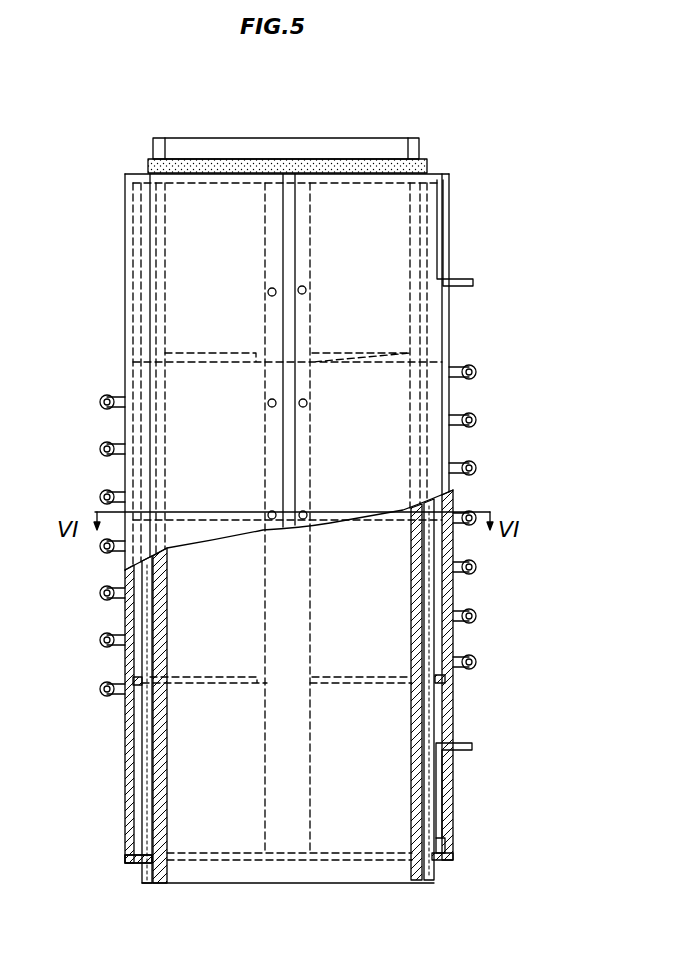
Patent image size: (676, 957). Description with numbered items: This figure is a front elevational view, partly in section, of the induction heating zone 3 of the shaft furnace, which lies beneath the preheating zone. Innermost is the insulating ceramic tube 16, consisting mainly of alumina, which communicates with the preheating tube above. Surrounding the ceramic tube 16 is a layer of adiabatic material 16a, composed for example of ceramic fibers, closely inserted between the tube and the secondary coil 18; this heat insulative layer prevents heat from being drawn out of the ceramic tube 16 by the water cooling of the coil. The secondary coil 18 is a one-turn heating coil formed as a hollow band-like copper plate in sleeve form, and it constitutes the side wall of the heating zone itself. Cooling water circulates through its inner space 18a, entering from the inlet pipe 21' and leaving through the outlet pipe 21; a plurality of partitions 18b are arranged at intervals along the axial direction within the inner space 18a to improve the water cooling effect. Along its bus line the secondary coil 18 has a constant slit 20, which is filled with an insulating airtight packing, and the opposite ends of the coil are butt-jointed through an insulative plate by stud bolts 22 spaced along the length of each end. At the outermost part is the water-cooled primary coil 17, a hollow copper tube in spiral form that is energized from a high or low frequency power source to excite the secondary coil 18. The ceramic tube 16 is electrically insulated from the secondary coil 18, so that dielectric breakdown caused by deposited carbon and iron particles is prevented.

The induction heating zone 3 is at (462, 167).
The insulating ceramic tube 16 is at (378, 148).
The adiabatic material 16a is at (195, 168).
The primary coil 17 is at (98, 496).
The secondary coil 18 is at (388, 238).
The inner space 18a is at (137, 843).
The partitions 18b is at (445, 678).
The slit 20 is at (289, 190).
The outlet pipe 21 is at (487, 798).
The inlet pipe 21' is at (481, 233).
The stud bolts 22 is at (306, 292).